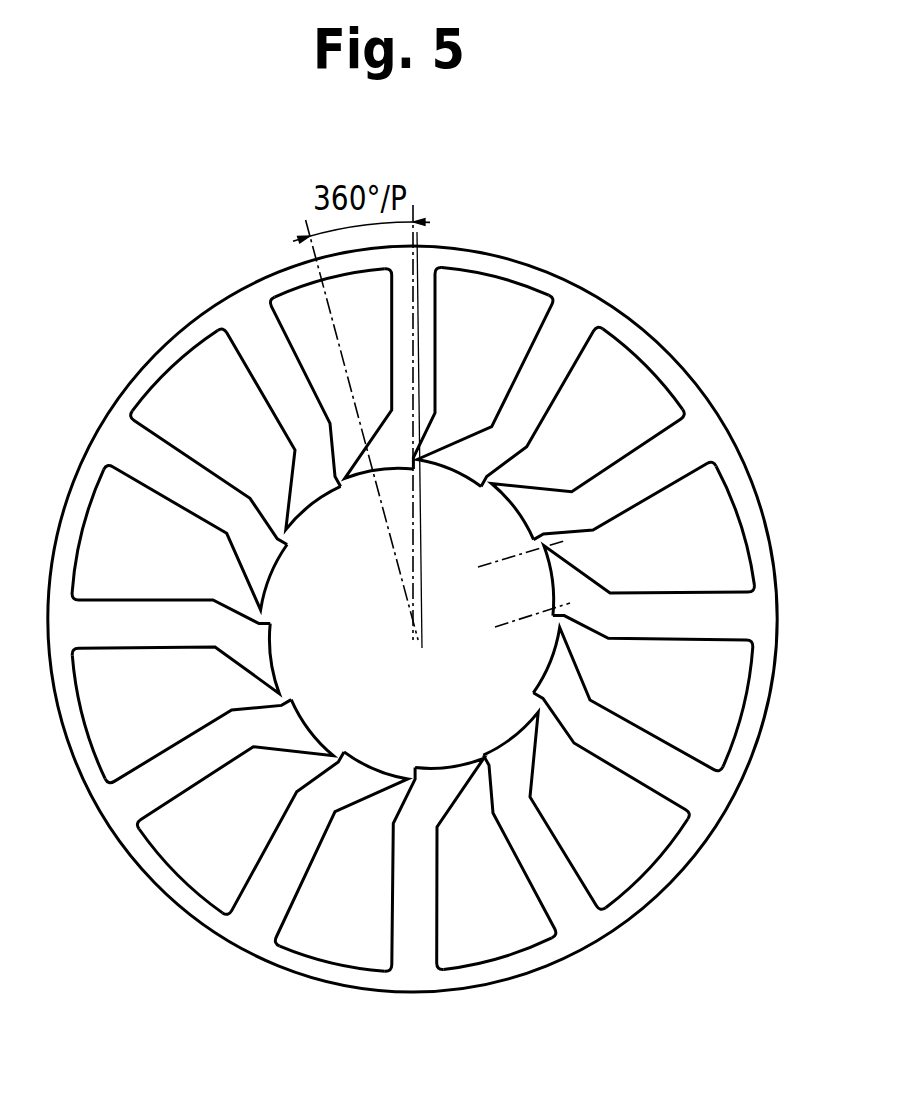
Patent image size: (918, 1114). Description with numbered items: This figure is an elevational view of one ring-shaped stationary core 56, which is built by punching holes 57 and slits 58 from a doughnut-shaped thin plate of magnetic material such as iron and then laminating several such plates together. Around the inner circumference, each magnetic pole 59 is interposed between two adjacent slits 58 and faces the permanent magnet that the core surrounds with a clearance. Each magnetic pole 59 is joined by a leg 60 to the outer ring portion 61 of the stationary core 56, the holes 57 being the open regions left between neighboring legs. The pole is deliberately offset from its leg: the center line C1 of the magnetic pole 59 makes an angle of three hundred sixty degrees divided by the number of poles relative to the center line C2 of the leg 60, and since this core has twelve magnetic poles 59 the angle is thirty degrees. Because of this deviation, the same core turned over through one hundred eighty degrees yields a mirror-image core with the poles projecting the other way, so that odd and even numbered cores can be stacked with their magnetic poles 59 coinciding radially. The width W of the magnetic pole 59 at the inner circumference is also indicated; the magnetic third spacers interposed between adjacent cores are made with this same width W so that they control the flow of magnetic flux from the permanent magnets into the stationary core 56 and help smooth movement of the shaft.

The stationary core 56 is at (647, 313).
The hole 57 is at (618, 843).
The slit 58 is at (545, 708).
The magnetic pole 59 is at (450, 790).
The leg 60 is at (408, 915).
The outer ring portion 61 is at (587, 933).
The center line of the magnetic pole C1 is at (335, 327).
The center line of the leg C2 is at (415, 320).
The width of the magnetic pole W is at (503, 620).